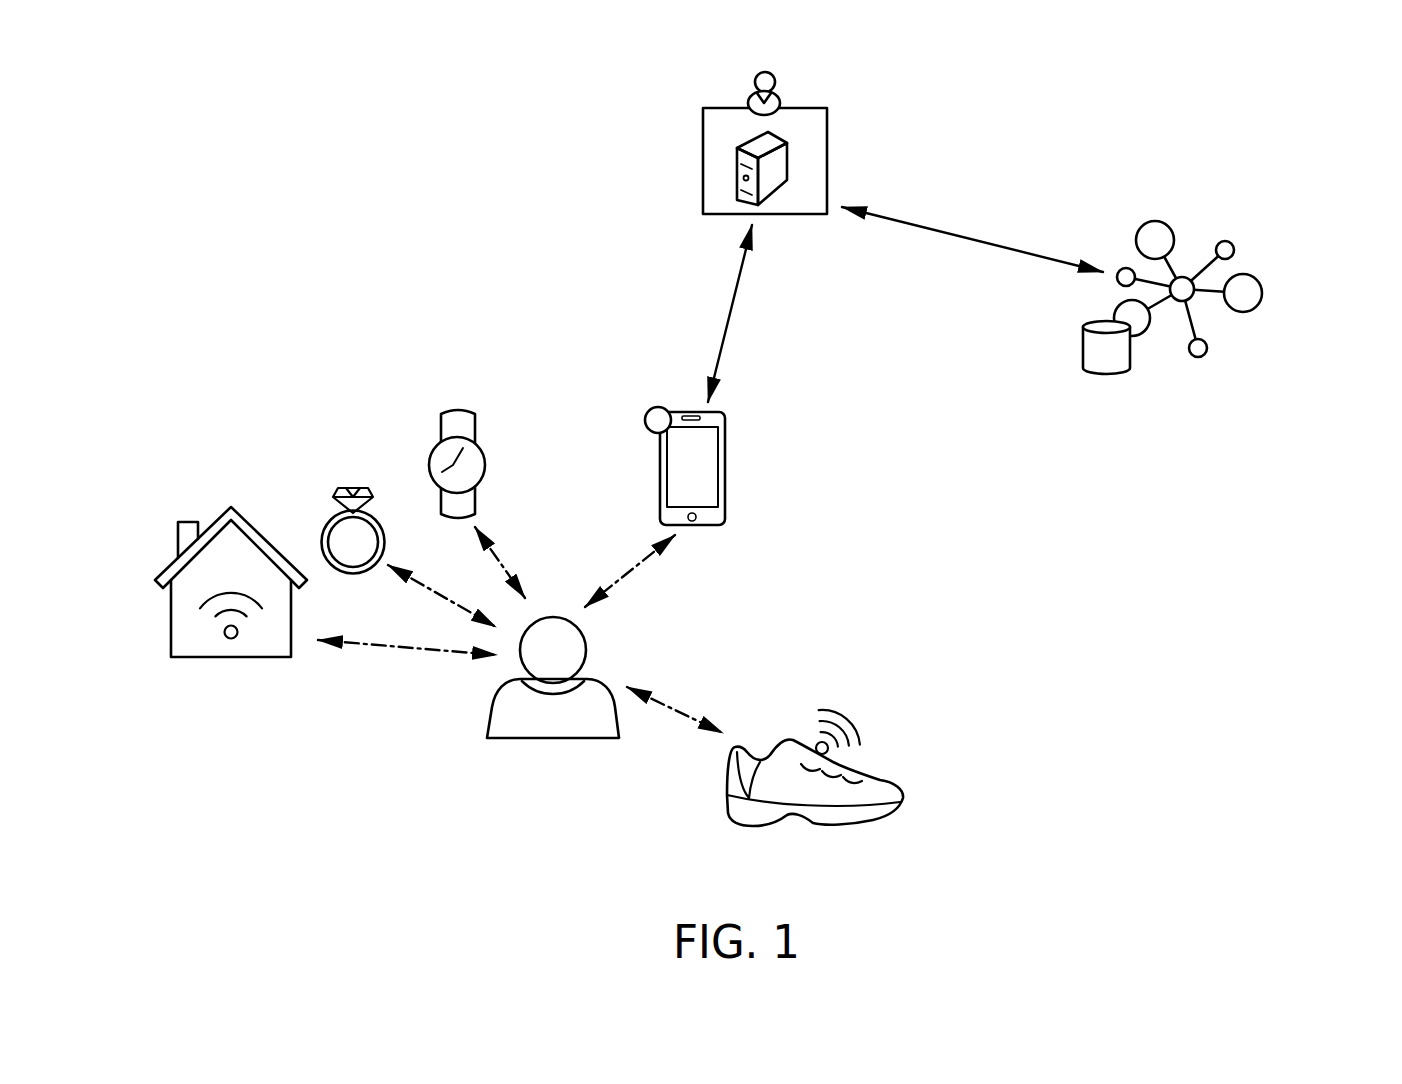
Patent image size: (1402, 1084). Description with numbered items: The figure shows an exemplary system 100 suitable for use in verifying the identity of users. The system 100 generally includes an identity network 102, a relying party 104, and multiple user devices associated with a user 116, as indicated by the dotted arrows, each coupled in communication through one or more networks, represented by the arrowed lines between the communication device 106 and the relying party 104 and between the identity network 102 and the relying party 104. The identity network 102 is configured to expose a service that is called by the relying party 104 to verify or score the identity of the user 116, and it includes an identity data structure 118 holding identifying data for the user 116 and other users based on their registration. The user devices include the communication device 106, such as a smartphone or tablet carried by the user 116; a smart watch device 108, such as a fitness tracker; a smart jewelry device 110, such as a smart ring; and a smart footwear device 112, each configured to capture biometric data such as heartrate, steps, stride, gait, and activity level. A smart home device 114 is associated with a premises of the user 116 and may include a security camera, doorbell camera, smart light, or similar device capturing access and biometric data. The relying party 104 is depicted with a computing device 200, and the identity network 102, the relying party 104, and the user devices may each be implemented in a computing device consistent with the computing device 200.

The system 100 is at (413, 128).
The identity network 102 is at (1237, 330).
The relying party 104 is at (700, 162).
The communication device 106 is at (700, 538).
The smart watch device 108 is at (498, 428).
The smart jewelry device 110 is at (335, 472).
The smart footwear device 112 is at (842, 850).
The smart home device 114 is at (183, 512).
The user 116 is at (495, 679).
The identity data structure 118 is at (1067, 345).
The computing device 200 is at (788, 165).